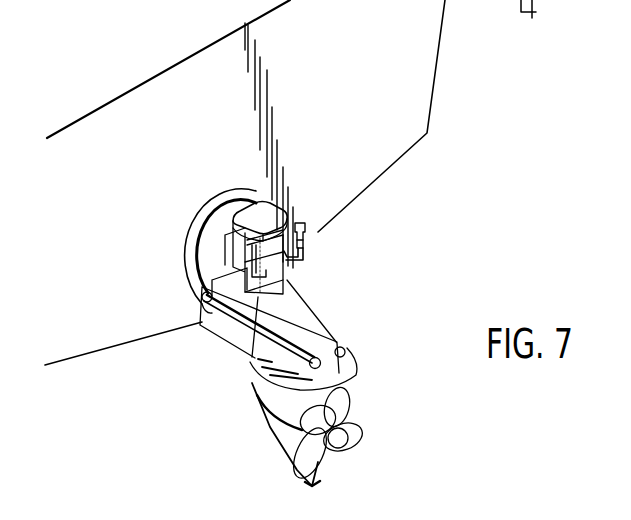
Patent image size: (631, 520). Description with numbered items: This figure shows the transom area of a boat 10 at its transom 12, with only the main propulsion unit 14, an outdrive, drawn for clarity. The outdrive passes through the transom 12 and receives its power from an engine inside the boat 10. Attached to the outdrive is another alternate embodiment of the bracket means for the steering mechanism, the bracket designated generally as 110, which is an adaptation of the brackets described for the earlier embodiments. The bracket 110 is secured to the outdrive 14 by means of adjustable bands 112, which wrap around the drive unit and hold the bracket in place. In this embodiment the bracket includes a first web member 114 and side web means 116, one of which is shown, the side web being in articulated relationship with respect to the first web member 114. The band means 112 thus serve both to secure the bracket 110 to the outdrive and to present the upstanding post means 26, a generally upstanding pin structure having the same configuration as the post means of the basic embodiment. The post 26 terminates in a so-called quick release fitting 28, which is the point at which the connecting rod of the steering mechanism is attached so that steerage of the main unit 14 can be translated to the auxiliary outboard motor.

The boat 10 is at (335, 264).
The transom 12 is at (403, 136).
The main propulsion unit 14 is at (322, 305).
The upstanding post 26 is at (310, 249).
The quick release fitting 28 is at (310, 233).
The bracket 110 is at (253, 291).
The adjustable bands 112 is at (216, 218).
The first web member 114 is at (287, 277).
The side web means 116 is at (228, 250).